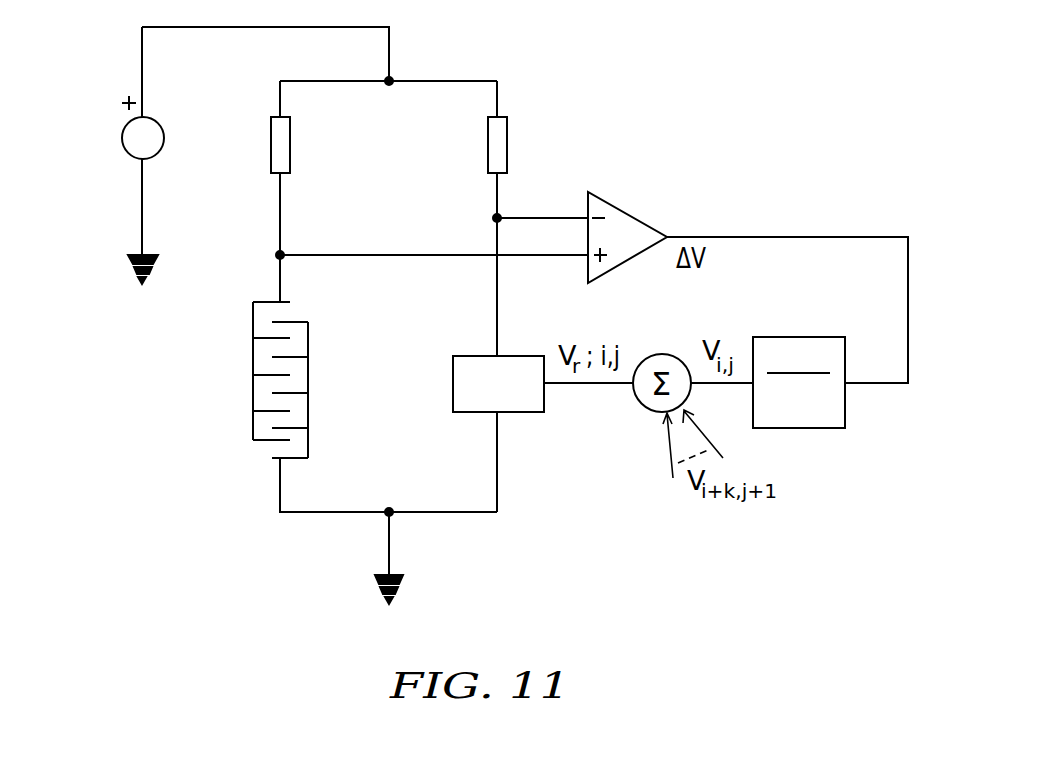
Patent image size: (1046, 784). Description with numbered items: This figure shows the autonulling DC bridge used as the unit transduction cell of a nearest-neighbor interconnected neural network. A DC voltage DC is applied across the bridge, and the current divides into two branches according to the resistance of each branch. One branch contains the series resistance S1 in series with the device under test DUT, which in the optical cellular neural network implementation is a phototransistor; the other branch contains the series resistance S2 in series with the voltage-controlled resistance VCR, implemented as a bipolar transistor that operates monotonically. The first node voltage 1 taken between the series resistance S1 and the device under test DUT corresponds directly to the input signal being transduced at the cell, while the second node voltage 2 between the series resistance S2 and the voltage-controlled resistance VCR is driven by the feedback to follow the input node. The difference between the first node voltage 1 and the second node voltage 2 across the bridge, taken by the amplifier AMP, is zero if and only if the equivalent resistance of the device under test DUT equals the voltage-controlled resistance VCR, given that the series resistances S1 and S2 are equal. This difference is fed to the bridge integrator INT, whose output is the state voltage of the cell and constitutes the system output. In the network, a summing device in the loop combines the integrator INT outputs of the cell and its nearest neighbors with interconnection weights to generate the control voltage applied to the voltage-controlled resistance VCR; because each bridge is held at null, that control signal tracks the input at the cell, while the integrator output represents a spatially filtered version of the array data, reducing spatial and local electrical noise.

The DC voltage DC is at (118, 127).
The resistance Rs1 S1 is at (271, 144).
The resistance Rs2 S2 is at (507, 147).
The node voltage V1 1 is at (395, 260).
The node voltage V2 2 is at (504, 222).
The device under test DUT is at (257, 380).
The instrumentation amplifier AMP is at (610, 205).
The voltage-controlled resistance VCR is at (498, 384).
The bridge integrator INT is at (845, 428).